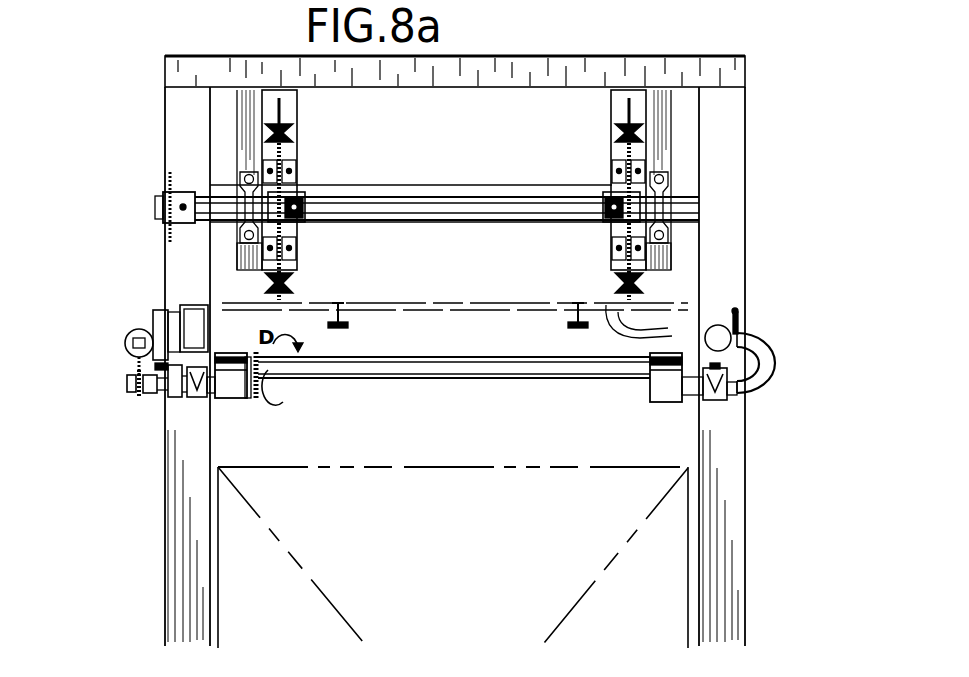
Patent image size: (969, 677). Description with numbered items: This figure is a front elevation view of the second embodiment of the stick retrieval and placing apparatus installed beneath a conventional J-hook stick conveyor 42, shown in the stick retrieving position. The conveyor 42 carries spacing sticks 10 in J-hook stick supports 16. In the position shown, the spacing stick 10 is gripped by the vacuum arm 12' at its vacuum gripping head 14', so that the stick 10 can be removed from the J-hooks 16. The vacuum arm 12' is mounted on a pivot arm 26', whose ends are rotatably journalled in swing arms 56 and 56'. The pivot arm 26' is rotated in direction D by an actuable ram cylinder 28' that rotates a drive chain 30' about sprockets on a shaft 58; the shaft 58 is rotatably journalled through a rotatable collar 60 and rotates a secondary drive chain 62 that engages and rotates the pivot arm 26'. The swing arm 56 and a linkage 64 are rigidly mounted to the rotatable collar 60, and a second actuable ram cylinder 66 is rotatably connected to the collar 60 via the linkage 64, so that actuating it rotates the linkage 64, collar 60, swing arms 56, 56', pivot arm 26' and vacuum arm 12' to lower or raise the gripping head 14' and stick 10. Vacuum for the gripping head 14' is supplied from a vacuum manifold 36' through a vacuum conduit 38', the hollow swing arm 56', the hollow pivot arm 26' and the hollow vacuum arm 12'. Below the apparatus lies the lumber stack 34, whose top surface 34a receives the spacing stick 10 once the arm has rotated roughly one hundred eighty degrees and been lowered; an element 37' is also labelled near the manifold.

The J-hook stick conveyor 42 is at (662, 155).
The spacing stick 10 is at (222, 306).
The J-hook stick supports 16 is at (645, 330).
The vacuum gripping head 14' is at (719, 312).
The vacuum arm 12' is at (413, 390).
The pivot arm 26' is at (706, 407).
The actuable ram cylinder 66 is at (180, 313).
The drive chain 30' is at (97, 341).
The actuable ram cylinder 28' is at (99, 337).
The shaft 58 is at (127, 384).
The rotatable collar 60 is at (145, 394).
The linkage 64 is at (172, 398).
The swing arm 56 is at (169, 422).
The secondary drive chain 62 is at (257, 400).
The swing arm 56' is at (743, 390).
The vacuum manifold 36' is at (771, 340).
The pin 37' is at (807, 308).
The vacuum conduit 38' is at (796, 364).
The lumber stack 34 is at (603, 541).
The top surface 34a is at (637, 468).